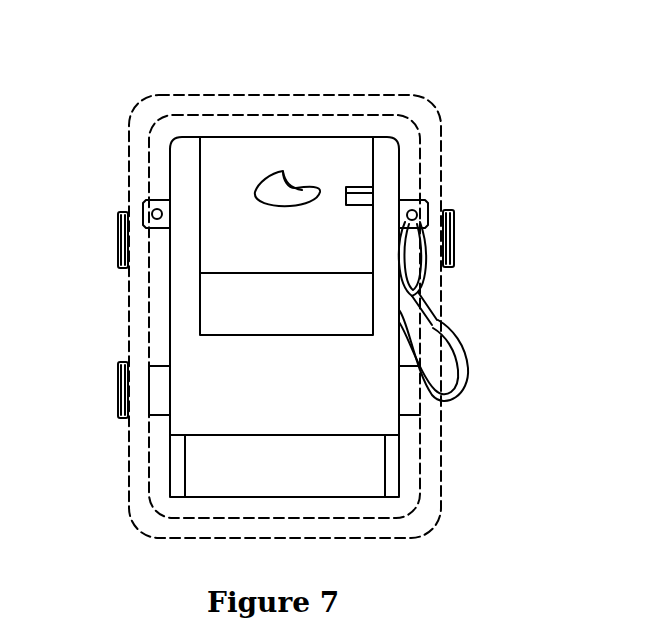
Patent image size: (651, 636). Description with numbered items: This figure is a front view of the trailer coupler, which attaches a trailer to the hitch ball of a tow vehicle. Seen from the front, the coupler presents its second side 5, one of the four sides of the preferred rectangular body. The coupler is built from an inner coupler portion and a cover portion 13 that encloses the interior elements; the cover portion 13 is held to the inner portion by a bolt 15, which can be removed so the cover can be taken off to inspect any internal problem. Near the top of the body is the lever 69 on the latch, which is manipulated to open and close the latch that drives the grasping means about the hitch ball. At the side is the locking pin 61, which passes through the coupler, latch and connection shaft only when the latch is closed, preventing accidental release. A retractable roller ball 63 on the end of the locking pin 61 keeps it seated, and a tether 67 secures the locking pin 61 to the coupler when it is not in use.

The second side 5 is at (233, 397).
The cover portion 13 is at (205, 95).
The bolt 15 is at (455, 245).
The locking pin 61 is at (428, 207).
The retractable roller ball 63 is at (143, 208).
The tether 67 is at (452, 340).
The lever 69 is at (285, 173).